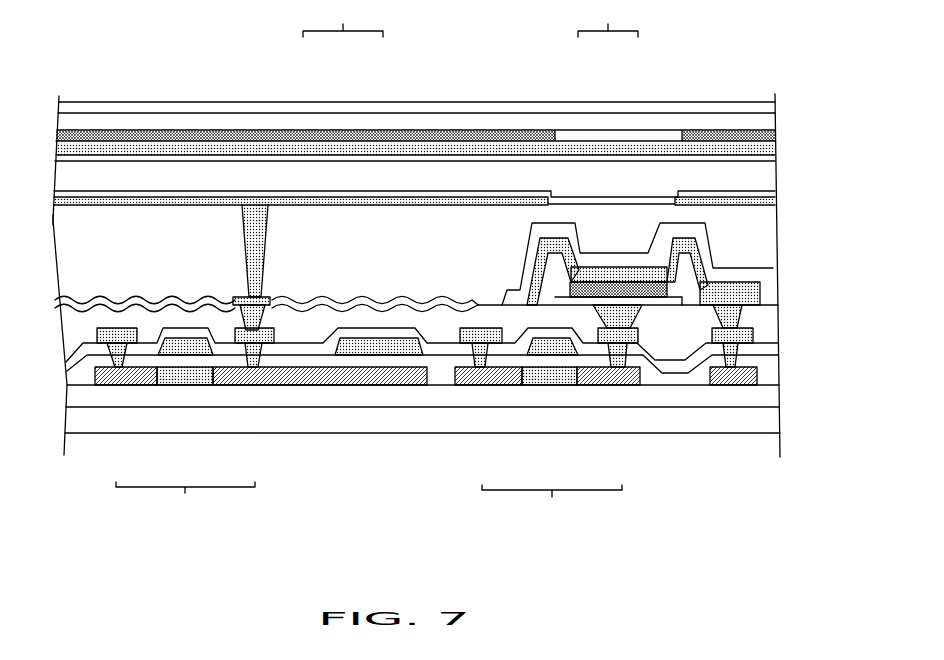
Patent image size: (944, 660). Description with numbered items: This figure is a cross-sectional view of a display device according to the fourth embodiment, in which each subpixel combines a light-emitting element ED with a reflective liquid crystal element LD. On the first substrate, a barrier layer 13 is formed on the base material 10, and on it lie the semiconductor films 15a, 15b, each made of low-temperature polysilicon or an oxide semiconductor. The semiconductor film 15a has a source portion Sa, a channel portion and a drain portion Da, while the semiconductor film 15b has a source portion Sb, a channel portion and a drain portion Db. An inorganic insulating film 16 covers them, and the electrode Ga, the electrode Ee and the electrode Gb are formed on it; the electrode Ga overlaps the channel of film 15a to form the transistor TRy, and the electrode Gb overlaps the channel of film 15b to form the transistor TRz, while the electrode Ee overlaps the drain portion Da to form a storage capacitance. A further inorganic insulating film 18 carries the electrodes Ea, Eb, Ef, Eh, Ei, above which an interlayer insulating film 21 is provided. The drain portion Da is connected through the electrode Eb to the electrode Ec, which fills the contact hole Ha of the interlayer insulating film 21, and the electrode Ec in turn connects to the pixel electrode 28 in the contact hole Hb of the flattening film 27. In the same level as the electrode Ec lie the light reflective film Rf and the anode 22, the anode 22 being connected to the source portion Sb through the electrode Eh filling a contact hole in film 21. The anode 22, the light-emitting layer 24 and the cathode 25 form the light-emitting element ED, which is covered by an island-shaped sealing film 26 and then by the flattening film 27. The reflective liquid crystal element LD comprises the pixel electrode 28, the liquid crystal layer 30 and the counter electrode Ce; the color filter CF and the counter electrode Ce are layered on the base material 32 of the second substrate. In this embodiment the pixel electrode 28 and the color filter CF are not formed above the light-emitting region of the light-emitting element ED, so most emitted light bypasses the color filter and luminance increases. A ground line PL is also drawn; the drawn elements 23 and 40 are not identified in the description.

The base material 10 is at (72, 418).
The barrier layer 13 is at (72, 400).
The inorganic insulating film 16 is at (72, 382).
The inorganic insulating film 18 is at (72, 363).
The interlayer insulating film 21 is at (72, 318).
The anode 22 is at (627, 300).
The pixel electrode layer 23 is at (553, 262).
The light-emitting layer 24 is at (592, 272).
The cathode 25 is at (608, 288).
The sealing film 26 is at (650, 258).
The flattening film 27 is at (58, 243).
The pixel electrode 28 is at (347, 200).
The liquid crystal layer 30 is at (58, 176).
The base material 32 is at (57, 119).
The cover substrate 40 is at (58, 103).
The color filter CF is at (56, 134).
The counter electrode Ce is at (56, 152).
The light reflective film Rf is at (66, 300).
The reflective liquid crystal element LD is at (343, 19).
The light-emitting element ED is at (608, 19).
The electrode Ea is at (118, 327).
The electrode Eb is at (232, 331).
The electrode Ec is at (270, 303).
The electrode Ee is at (394, 350).
The electrode Ef is at (483, 327).
The electrode Eh is at (645, 337).
The electrode Ei is at (703, 312).
The contact hole Ha is at (263, 313).
The contact hole Hb is at (255, 300).
The source portion Sa is at (118, 386).
The electrode Ga is at (170, 357).
The semiconductor film 15a is at (207, 396).
The drain portion Da is at (257, 386).
The drain portion Db is at (482, 386).
The electrode Gb is at (533, 357).
The semiconductor film 15b is at (570, 396).
The source portion Sb is at (615, 386).
The ground line PL is at (743, 387).
The transistor TRy is at (185, 502).
The transistor TRz is at (552, 505).